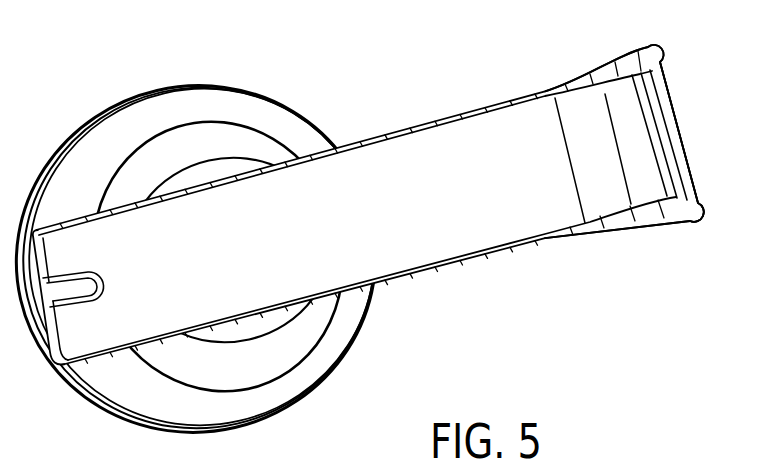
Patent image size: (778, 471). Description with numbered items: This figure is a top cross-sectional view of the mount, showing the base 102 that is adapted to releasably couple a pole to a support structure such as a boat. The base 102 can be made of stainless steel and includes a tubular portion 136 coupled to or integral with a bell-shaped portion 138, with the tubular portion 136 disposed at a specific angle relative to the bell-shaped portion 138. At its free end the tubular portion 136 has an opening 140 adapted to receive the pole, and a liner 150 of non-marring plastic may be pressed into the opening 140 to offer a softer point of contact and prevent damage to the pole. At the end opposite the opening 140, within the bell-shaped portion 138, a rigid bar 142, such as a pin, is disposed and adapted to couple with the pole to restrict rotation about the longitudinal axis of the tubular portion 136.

The base 102 is at (365, 136).
The tubular portion 136 is at (510, 135).
The bell-shaped portion 138 is at (120, 145).
The opening 140 is at (677, 184).
The rigid bar 142 is at (107, 284).
The liner 150 is at (647, 146).